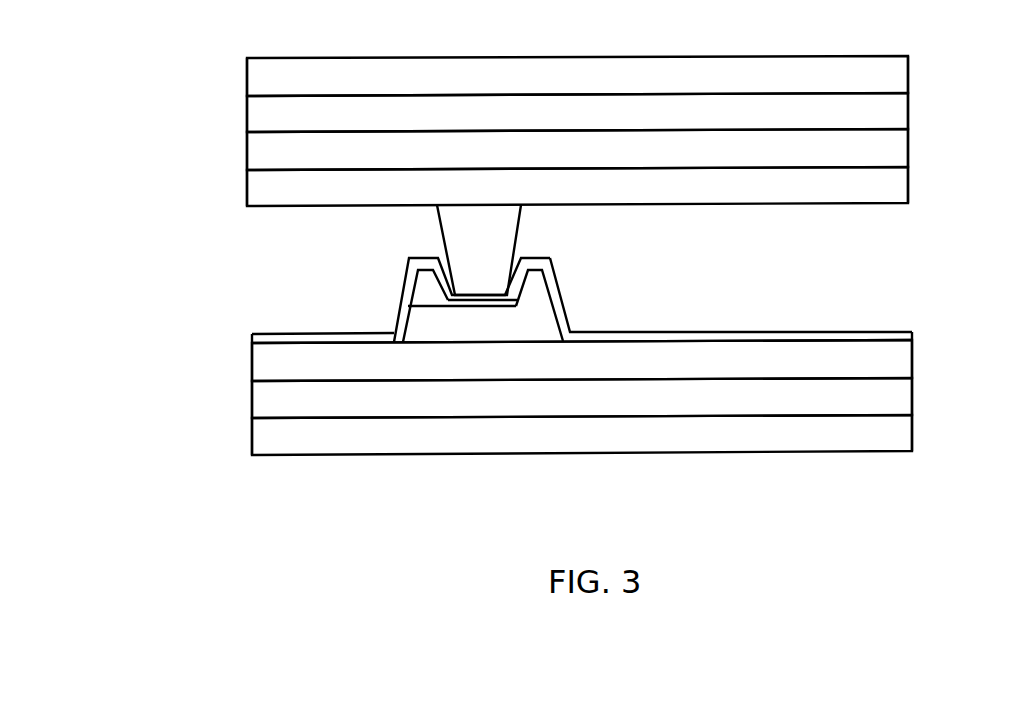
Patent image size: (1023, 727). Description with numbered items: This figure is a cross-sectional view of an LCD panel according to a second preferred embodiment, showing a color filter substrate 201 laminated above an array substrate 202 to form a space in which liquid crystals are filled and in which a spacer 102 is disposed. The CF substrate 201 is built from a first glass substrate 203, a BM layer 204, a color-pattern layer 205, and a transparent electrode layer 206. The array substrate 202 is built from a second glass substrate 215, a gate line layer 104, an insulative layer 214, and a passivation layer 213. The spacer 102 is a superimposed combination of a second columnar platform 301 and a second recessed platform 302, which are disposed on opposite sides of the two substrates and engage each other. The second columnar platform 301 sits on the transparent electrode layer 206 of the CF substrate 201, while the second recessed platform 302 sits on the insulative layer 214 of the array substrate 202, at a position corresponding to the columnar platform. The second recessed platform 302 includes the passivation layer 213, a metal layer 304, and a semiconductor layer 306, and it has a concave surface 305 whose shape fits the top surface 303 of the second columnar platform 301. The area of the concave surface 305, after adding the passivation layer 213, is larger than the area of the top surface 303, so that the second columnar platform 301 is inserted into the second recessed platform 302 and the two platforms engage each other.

The spacer 102 is at (517, 275).
The gate line layer 104 is at (912, 386).
The color filter substrate 201 is at (577, 135).
The array substrate 202 is at (582, 372).
The first glass substrate 203 is at (908, 75).
The BM layer 204 is at (908, 112).
The color-pattern layer 205 is at (908, 148).
The transparent electrode layer 206 is at (908, 185).
The passivation layer 213 is at (790, 331).
The insulative layer 214 is at (912, 350).
The second glass substrate 215 is at (912, 422).
The second columnar platform 301 is at (519, 217).
The second recessed platform 302 is at (383, 262).
The top surface 303 is at (493, 294).
The metal layer 304 is at (558, 285).
The concave surface 305 is at (460, 306).
The semiconductor layer 306 is at (601, 295).